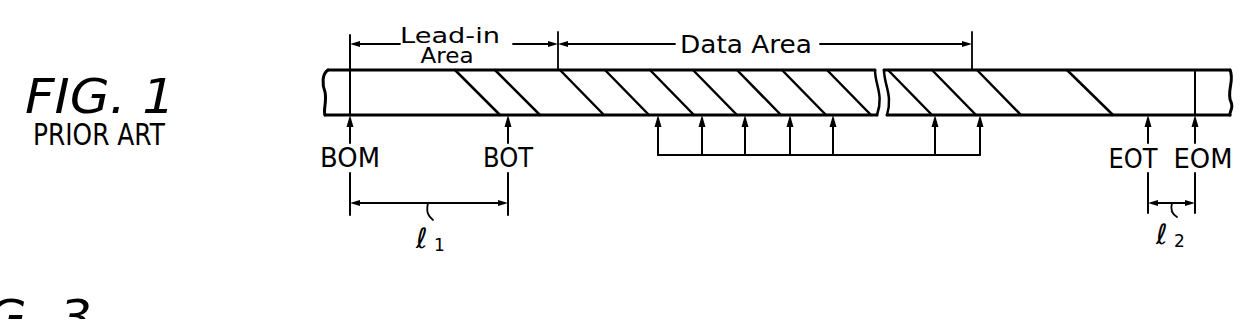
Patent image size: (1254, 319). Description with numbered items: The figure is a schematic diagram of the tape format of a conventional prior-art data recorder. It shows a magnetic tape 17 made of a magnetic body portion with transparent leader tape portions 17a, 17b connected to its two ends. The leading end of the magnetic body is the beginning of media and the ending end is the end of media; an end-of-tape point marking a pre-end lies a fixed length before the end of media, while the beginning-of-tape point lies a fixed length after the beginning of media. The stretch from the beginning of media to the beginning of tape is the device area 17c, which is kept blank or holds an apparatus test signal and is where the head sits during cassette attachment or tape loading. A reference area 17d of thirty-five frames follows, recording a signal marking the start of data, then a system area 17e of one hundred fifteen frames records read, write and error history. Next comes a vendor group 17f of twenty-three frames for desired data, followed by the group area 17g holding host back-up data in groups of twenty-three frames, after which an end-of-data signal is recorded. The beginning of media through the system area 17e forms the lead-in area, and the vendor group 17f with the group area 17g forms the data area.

The magnetic tape 17 is at (1028, 68).
The transparent leader tape portion 17a is at (332, 82).
The transparent leader tape portion 17b is at (1210, 80).
The device area 17c is at (425, 105).
The reference area 17d is at (522, 105).
The system area 17e is at (568, 105).
The vendor group 17f is at (622, 105).
The group area 17g is at (835, 134).